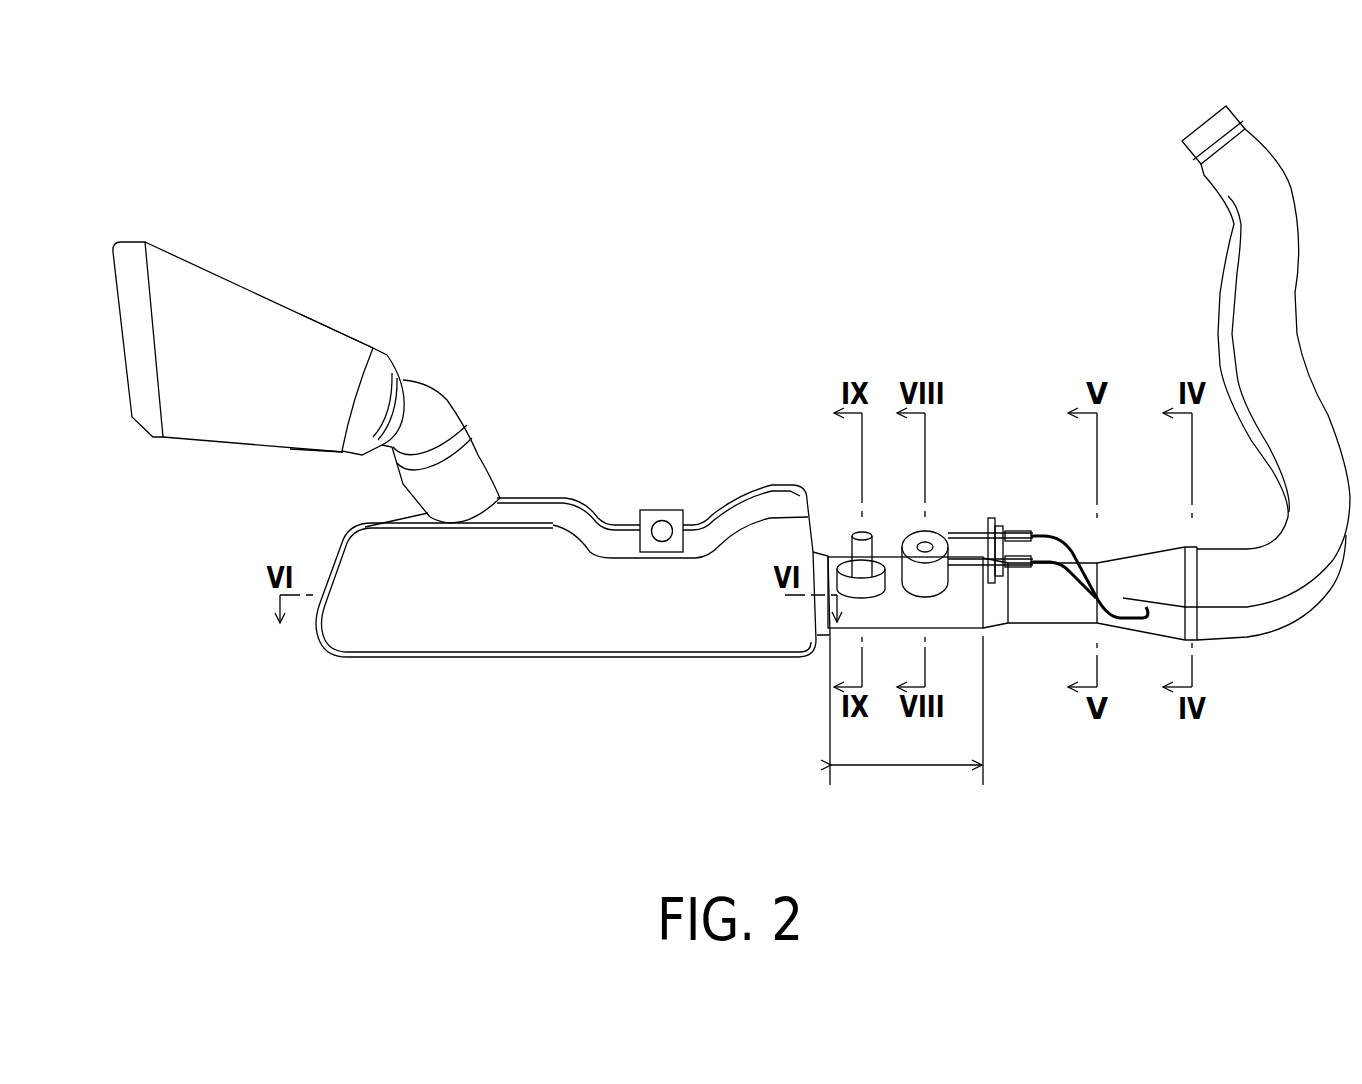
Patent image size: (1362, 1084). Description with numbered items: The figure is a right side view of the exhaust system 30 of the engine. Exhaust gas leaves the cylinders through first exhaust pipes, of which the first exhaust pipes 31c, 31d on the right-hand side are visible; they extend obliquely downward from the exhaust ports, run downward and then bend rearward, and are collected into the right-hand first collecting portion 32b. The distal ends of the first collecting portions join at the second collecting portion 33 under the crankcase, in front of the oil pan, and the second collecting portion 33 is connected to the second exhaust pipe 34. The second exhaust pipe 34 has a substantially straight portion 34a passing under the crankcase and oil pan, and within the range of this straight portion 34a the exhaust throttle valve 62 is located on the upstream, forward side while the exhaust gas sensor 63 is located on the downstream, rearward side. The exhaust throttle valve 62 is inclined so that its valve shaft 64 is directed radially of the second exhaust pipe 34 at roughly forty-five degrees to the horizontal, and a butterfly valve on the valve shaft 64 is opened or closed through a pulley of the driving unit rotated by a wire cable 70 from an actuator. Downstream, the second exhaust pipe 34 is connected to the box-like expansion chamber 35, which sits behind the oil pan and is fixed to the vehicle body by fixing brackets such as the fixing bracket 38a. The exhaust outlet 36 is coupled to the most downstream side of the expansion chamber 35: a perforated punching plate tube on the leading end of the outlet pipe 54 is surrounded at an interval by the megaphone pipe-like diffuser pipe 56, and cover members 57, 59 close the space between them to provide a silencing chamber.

The exhaust system 30 is at (757, 332).
The first exhaust pipe 31c is at (1220, 289).
The first exhaust pipe 31d is at (1232, 330).
The first collecting portion 32b is at (1150, 552).
The second collecting portion 33 is at (1038, 612).
The second exhaust pipe 34 is at (886, 556).
The substantially straight portion 34a is at (906, 719).
The expansion chamber 35 is at (603, 658).
The exhaust outlet 36 is at (255, 292).
The fixing bracket 38a is at (660, 510).
The outlet pipe 54 is at (442, 390).
The diffuser pipe 56 is at (322, 322).
The cover member 57 is at (380, 347).
The cover member 59 is at (128, 240).
The exhaust throttle valve 62 is at (932, 531).
The exhaust gas sensor 63 is at (855, 530).
The valve shaft 64 is at (926, 553).
The wire cable 70 is at (1052, 537).